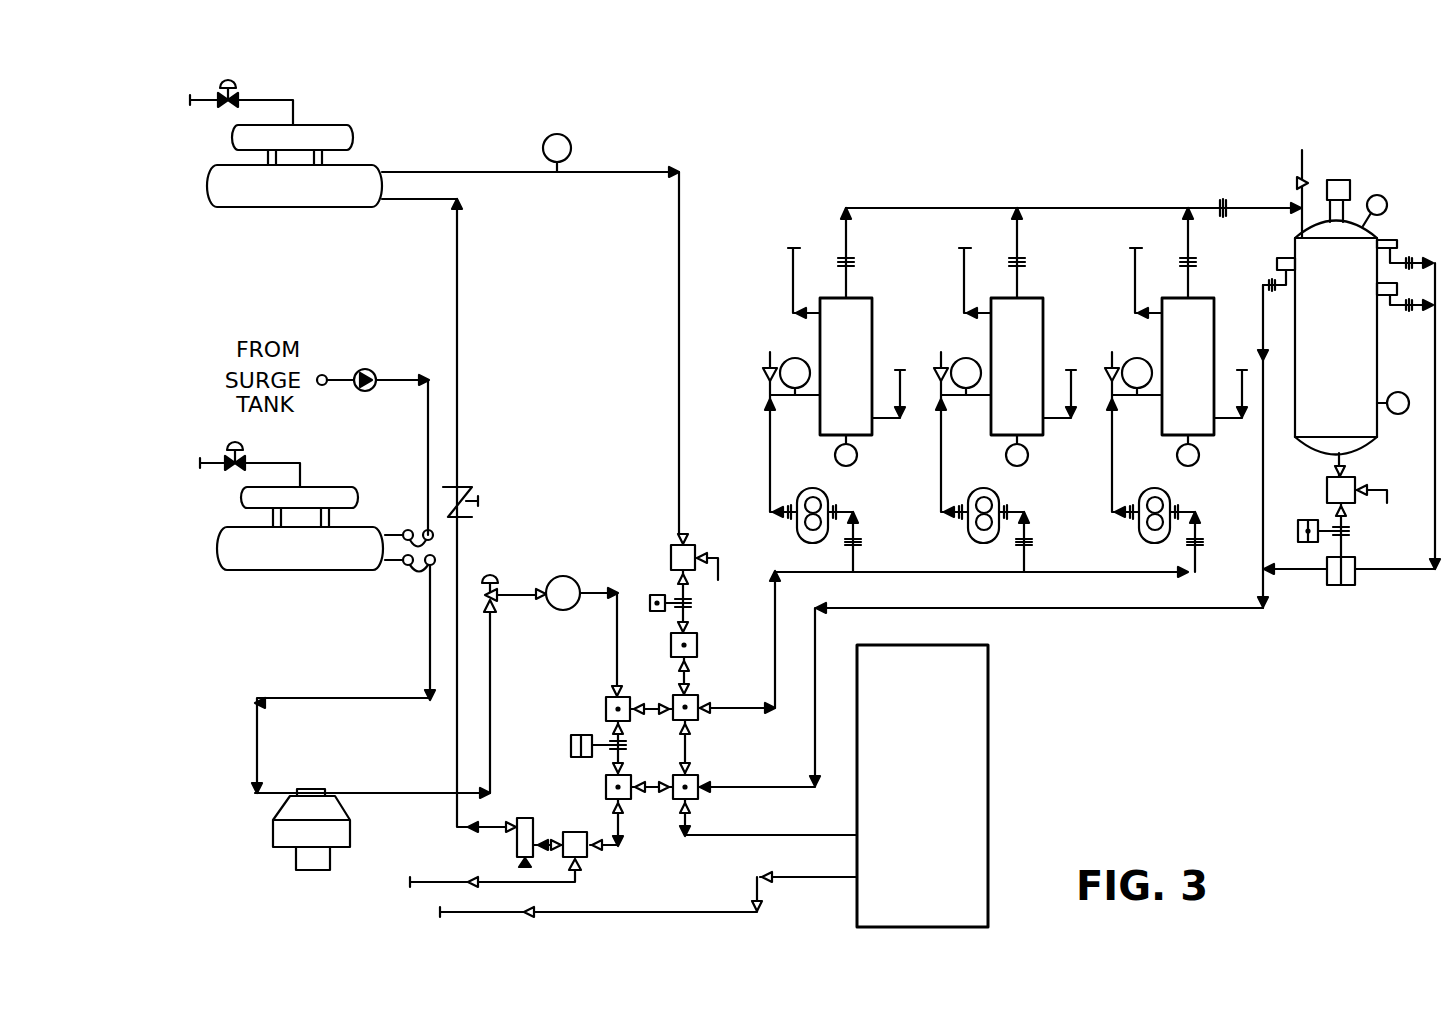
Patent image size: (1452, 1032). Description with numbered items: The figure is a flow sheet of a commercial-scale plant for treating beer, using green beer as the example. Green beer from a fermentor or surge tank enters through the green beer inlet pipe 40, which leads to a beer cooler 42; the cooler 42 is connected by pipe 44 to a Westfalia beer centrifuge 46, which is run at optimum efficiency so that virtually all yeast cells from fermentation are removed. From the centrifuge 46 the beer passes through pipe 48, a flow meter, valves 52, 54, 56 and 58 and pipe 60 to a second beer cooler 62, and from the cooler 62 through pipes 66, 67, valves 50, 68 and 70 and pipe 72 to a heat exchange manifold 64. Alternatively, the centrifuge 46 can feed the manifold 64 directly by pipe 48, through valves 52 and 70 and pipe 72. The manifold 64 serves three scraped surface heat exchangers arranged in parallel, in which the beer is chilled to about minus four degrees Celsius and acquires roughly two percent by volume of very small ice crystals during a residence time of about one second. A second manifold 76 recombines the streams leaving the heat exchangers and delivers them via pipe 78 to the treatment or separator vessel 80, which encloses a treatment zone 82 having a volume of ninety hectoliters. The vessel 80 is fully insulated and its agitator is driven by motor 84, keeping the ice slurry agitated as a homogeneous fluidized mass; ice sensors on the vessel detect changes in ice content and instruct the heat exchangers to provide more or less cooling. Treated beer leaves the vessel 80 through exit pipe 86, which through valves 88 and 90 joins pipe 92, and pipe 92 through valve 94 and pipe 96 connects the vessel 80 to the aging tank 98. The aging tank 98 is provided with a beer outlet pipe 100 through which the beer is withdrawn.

The green beer inlet pipe 40 is at (350, 378).
The beer cooler 42 is at (317, 507).
The pipe 44 is at (430, 632).
The Westfalia beer centrifuge 46 is at (311, 829).
The pipe 48 is at (403, 797).
The valve 50 is at (566, 576).
The valve 52 is at (606, 704).
The valve 54 is at (606, 782).
The valve 56 is at (568, 832).
The valve 58 is at (522, 818).
The pipe 60 is at (459, 757).
The beer cooler 62 is at (286, 143).
The heat exchange manifold 64 is at (963, 574).
The exit pipe 66 is at (678, 255).
The valve 67 is at (697, 545).
The valve 68 is at (707, 664).
The valve 70 is at (724, 726).
The pipe 72 is at (774, 618).
The second manifold 76 is at (1081, 206).
The pipe 78 is at (1206, 205).
The treatment or separator vessel 80 is at (1381, 328).
The treatment zone 82 is at (1355, 302).
The motor 84 is at (1338, 180).
The outlet 86 is at (1347, 460).
The valve 88 is at (1327, 490).
The valve 90 is at (1296, 527).
The pipe 92 is at (1290, 573).
The valve 94 is at (699, 778).
The pipe 96 is at (705, 840).
The aging tank 98 is at (922, 786).
The beer outlet pipe 100 is at (790, 880).